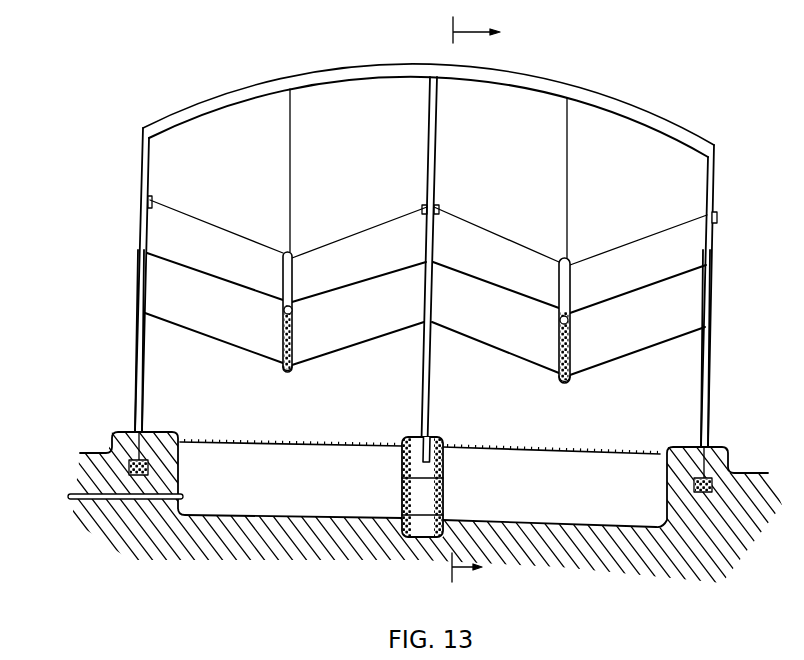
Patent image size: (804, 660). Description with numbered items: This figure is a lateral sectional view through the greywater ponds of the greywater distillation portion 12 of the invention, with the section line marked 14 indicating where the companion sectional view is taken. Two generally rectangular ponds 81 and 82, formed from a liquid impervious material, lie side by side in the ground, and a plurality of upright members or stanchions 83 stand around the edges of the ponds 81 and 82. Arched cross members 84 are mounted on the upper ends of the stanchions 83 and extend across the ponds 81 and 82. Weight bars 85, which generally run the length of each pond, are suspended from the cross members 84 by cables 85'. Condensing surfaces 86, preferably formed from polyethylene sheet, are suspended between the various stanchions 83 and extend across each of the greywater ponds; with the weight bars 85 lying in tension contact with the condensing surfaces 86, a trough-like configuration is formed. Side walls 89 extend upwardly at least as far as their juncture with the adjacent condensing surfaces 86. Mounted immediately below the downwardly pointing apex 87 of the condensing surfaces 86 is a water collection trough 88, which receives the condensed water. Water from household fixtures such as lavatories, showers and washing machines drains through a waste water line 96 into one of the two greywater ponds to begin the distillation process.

The greywater distillation portion 12 is at (100, 138).
The section line for FIG. 14 is at (461, 299).
The pond 81 is at (307, 445).
The pond 82 is at (478, 450).
The stanchion 83 is at (148, 167).
The arched cross member 84 is at (556, 88).
The weight bar 85 is at (450, 291).
The cable 85' is at (458, 173).
The condensing surface 86 is at (165, 240).
The downwardly pointing apex 87 is at (283, 306).
The water collection trough 88 is at (287, 374).
The side wall 89 is at (137, 293).
The waste water line 96 is at (128, 498).